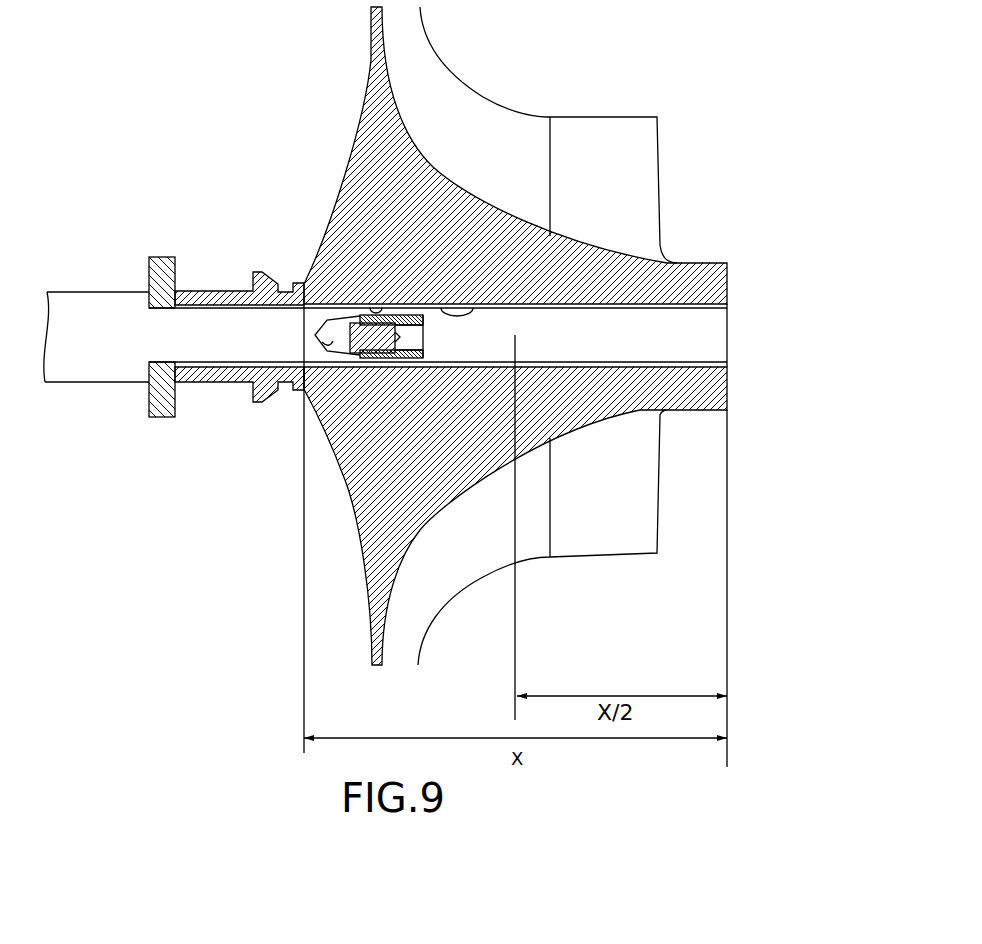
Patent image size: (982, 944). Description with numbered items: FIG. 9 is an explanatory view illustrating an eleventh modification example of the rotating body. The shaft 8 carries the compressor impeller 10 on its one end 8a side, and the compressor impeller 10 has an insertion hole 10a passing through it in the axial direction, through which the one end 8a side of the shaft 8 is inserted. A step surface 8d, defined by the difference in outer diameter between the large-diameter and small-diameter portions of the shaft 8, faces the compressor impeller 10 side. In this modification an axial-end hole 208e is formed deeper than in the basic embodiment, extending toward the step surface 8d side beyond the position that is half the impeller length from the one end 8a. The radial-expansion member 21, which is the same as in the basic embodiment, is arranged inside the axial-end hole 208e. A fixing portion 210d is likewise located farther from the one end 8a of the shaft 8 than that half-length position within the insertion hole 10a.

The shaft 8 is at (223, 327).
The one end 8a is at (727, 310).
The step surface 8d is at (150, 333).
The compressor impeller 10 is at (340, 213).
The insertion hole 10a is at (480, 307).
The radial-expansion member 21 is at (331, 331).
The fixing portion 210d is at (365, 308).
The axial-end hole 208e is at (293, 385).